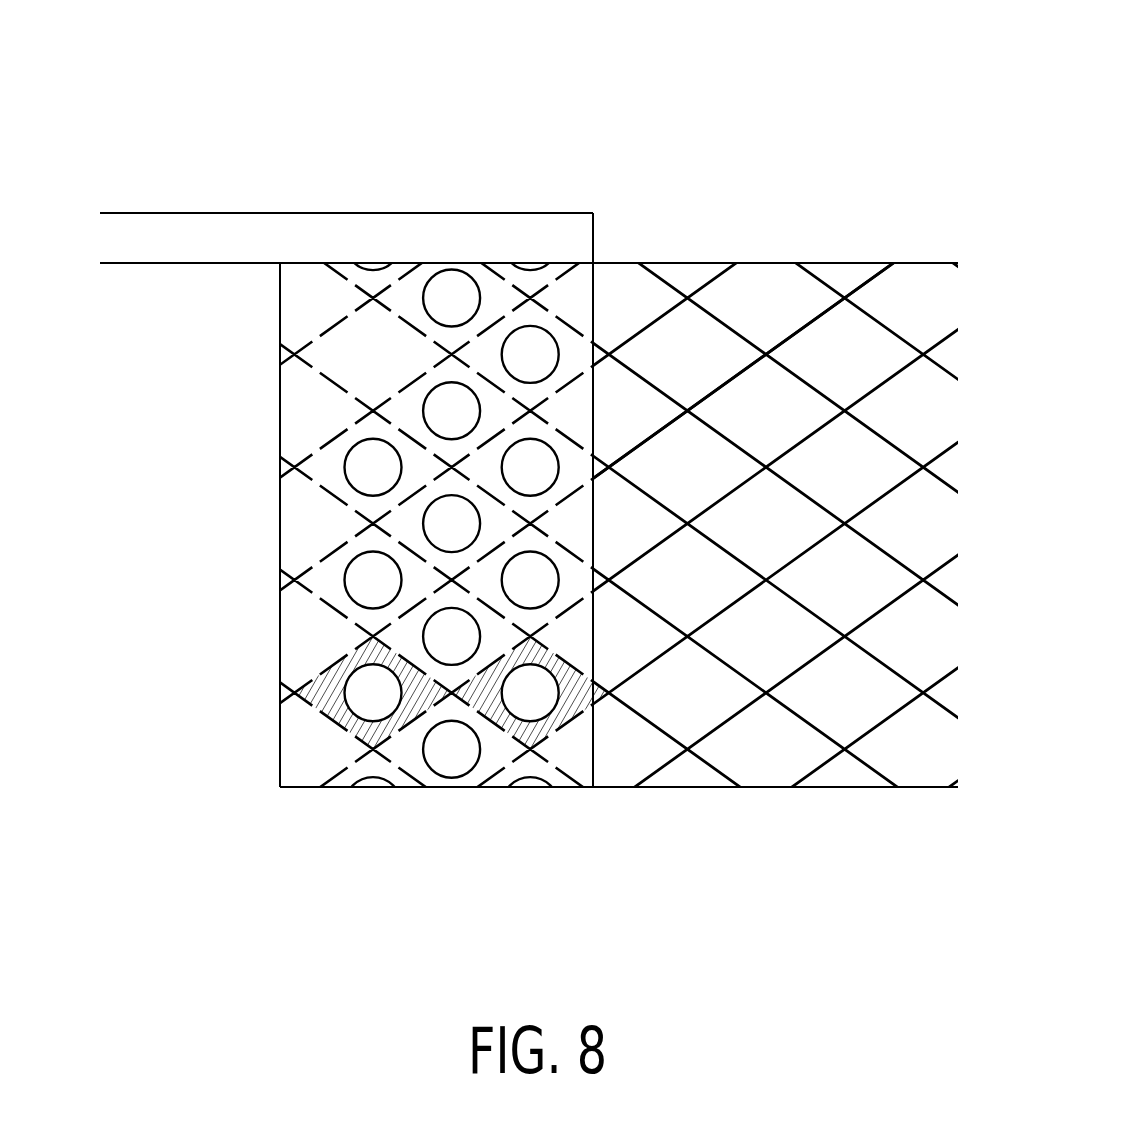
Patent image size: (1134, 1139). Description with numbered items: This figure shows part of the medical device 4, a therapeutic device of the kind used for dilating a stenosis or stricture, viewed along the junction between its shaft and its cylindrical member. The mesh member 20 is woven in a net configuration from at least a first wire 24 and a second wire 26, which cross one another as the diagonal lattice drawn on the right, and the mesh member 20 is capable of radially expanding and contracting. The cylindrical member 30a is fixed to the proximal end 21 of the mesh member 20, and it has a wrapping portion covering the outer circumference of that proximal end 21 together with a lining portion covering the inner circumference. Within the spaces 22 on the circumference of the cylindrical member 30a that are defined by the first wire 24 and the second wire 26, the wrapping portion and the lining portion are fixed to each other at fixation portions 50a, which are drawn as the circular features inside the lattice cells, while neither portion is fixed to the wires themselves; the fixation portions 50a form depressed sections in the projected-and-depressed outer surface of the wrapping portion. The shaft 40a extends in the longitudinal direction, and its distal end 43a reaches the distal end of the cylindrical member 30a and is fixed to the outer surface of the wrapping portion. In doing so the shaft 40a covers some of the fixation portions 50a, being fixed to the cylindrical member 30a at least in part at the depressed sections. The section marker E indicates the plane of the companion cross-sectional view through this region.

The medical device 4 is at (657, 185).
The mesh member 20 is at (907, 240).
The proximal end 21 is at (278, 818).
The spaces 22 is at (470, 702).
The first wire 24 is at (720, 320).
The second wire 26 is at (670, 768).
The cylindrical member 30a is at (607, 765).
The shaft 40a is at (205, 222).
The distal end 43a is at (617, 193).
The fixation portions 50a is at (347, 591).
The section line E is at (543, 188).